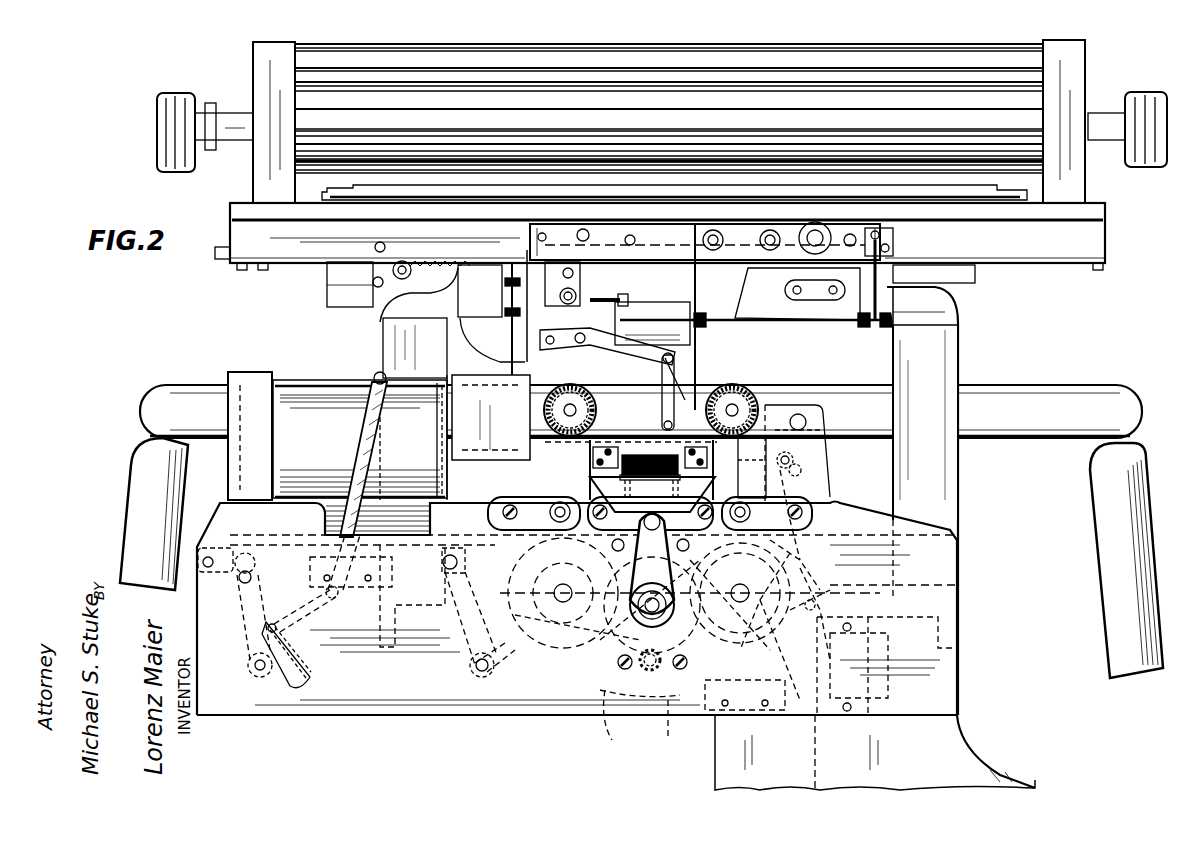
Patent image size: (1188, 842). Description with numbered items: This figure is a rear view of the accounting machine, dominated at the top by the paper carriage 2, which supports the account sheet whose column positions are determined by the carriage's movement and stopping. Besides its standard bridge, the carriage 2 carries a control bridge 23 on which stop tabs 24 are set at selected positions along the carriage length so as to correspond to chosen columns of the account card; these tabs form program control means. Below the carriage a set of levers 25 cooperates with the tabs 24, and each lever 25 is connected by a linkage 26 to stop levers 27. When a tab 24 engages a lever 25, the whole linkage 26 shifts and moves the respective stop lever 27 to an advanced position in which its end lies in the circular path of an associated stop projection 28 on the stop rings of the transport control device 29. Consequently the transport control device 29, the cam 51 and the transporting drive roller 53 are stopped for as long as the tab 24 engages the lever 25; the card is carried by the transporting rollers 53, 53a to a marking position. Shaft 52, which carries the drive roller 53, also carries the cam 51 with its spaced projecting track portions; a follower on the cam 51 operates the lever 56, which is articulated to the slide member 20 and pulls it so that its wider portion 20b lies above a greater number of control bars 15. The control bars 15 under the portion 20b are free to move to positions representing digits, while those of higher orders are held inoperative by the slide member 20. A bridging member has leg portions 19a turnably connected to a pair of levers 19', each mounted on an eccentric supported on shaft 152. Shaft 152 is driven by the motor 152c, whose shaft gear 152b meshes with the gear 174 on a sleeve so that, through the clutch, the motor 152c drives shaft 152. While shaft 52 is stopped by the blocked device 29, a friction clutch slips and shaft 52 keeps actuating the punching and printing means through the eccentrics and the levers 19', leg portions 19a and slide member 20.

The paper carriage 2 is at (1035, 90).
The control bridge 23 is at (985, 192).
The stop tabs 24 is at (702, 258).
The levers 25 is at (582, 288).
The linkage 26 is at (545, 343).
The slide member 20 is at (778, 410).
The wider portion of slide member 20b is at (655, 442).
The leg portions 19a is at (593, 465).
The control bar 15 is at (618, 472).
The levers 19' is at (652, 545).
The stop levers 27 is at (746, 485).
The lever 56 is at (829, 461).
The transporting roller 53a is at (826, 498).
The transport control device 29 is at (800, 541).
The transporting drive roller 53 is at (792, 556).
The cam 51 is at (805, 569).
The stop projection 28 is at (797, 612).
The shaft 52 is at (740, 602).
The shaft 152 is at (640, 628).
The gear 174 is at (630, 645).
The motor 152c is at (608, 722).
The gear 152b is at (668, 716).